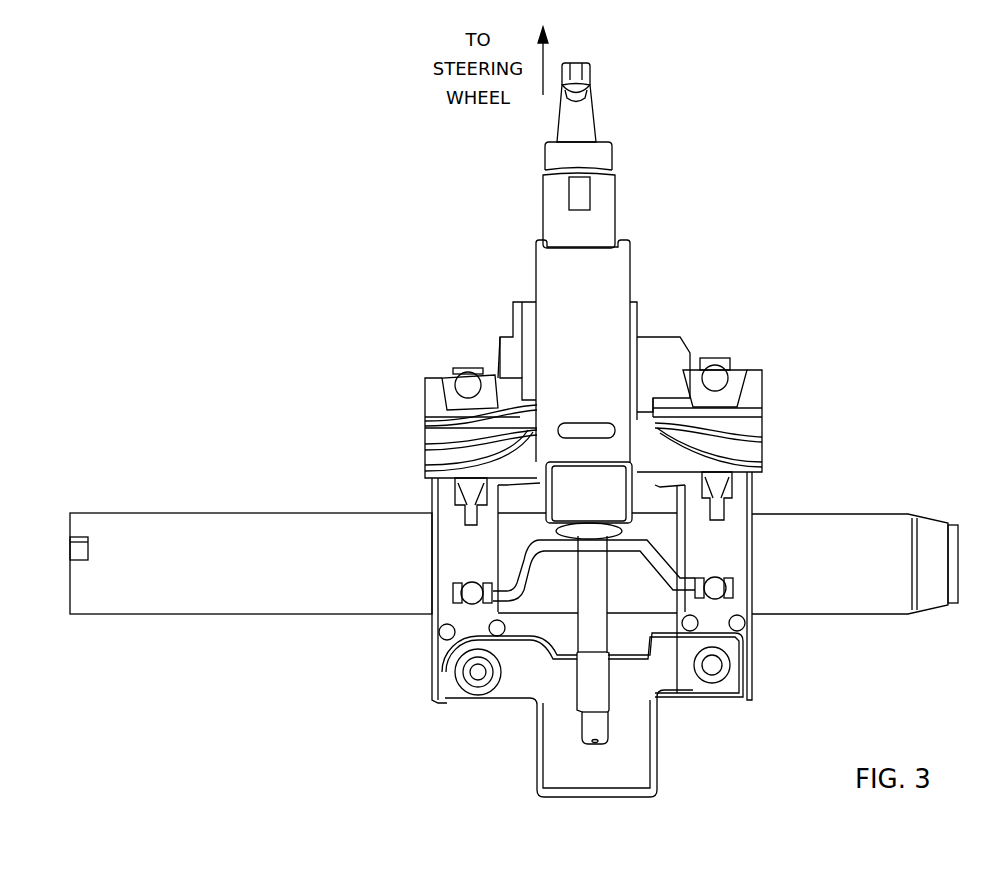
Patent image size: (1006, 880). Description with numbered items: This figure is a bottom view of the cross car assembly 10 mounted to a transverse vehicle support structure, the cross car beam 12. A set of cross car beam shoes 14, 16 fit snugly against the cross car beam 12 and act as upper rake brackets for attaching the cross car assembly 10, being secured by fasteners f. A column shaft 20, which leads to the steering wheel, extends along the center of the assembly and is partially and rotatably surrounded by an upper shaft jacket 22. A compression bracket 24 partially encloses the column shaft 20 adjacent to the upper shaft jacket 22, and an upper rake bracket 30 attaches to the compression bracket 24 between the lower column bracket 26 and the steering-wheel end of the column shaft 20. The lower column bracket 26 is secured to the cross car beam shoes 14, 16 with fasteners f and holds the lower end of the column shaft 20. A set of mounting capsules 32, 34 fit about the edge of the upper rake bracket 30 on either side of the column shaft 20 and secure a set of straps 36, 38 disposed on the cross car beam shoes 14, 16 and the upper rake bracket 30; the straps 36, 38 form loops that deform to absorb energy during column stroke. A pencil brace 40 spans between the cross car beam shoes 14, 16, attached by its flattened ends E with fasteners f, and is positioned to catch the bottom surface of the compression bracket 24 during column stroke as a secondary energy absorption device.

The cross car assembly 10 is at (930, 189).
The cross car beam 12 is at (142, 607).
The cross car beam shoe 14 is at (435, 556).
The cross car beam shoe 16 is at (752, 545).
The column shaft 20 is at (590, 108).
The upper shaft jacket 22 is at (548, 197).
The compression bracket 24 is at (623, 264).
The lower column bracket 26 is at (627, 715).
The upper rake bracket 30 is at (430, 440).
The mounting capsule 32 is at (446, 376).
The mounting capsule 34 is at (735, 370).
The strap 36 is at (478, 370).
The strap 38 is at (722, 366).
The pencil brace 40 is at (518, 584).
The flattened end E is at (488, 583).
The fastener f is at (466, 378).